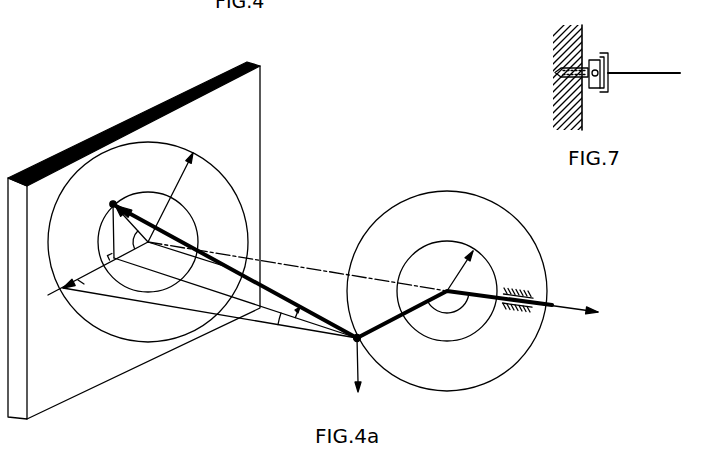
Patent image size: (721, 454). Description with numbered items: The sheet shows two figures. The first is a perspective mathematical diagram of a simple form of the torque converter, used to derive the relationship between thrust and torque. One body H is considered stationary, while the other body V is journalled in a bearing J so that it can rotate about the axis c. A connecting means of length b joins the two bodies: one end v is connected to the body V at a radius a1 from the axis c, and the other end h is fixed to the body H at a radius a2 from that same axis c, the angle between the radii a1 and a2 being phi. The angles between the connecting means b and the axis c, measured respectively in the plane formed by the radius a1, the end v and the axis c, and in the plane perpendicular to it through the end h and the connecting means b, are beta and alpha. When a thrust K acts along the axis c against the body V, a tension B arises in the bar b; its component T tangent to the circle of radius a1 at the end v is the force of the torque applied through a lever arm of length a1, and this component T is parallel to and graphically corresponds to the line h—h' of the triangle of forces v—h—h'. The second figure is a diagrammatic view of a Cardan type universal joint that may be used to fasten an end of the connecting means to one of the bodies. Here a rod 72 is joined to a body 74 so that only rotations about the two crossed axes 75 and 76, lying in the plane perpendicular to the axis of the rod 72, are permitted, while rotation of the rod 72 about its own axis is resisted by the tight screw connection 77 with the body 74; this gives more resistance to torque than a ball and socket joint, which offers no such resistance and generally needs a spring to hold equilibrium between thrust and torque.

In FIG. 7, the rod 72 is at (642, 72).
In FIG. 7, the body 74 is at (583, 33).
In FIG. 7, the axis 75 is at (603, 56).
In FIG. 7, the axis 76 is at (607, 91).
In FIG. 7, the tight screw connection 77 is at (557, 95).
In FIG. 4A, the body H is at (58, 402).
In FIG. 4A, the end h is at (112, 219).
In FIG. 4A, the projected point h' is at (220, 294).
In FIG. 4A, the tension B is at (196, 247).
In FIG. 4A, the connecting means b is at (273, 292).
In FIG. 4A, the axis c is at (280, 262).
In FIG. 4A, the thrust K is at (126, 300).
In FIG. 4A, the body V is at (454, 314).
In FIG. 4A, the end v is at (361, 340).
In FIG. 4A, the component T is at (356, 376).
In FIG. 4A, the bearing J is at (522, 310).
In FIG. 4A, the radius a1 is at (386, 313).
In FIG. 4A, the radius a2 is at (297, 266).
In FIG. 4A, the angle alpha is at (294, 311).
In FIG. 4A, the angle beta is at (272, 325).
In FIG. 4A, the angle phi is at (131, 239).